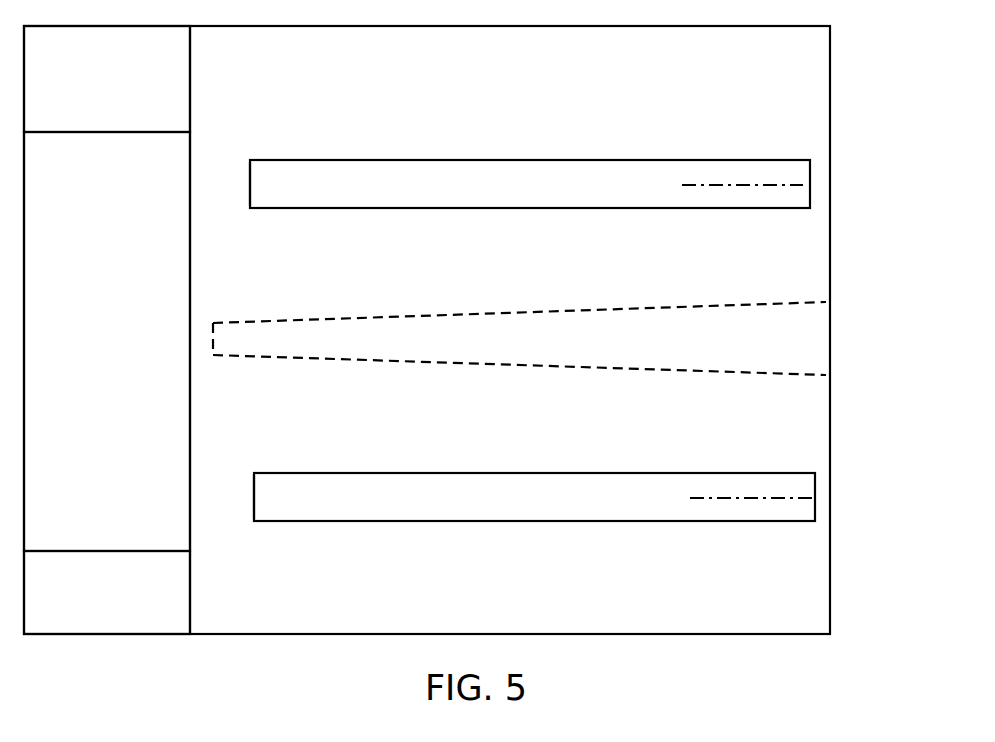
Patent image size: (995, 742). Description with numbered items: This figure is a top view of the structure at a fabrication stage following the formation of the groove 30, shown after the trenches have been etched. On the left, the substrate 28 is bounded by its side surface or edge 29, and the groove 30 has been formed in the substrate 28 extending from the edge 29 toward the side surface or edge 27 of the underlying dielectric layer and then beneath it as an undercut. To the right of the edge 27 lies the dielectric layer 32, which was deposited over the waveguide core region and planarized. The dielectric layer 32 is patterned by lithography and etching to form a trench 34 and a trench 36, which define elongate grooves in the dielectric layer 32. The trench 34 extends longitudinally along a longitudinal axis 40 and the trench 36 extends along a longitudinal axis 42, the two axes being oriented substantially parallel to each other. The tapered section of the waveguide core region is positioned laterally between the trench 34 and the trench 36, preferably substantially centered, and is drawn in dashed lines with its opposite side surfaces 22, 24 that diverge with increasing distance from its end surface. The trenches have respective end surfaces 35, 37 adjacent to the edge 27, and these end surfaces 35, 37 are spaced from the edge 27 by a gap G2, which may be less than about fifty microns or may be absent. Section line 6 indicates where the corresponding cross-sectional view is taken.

The section line 6 is at (462, 74).
The side surface 22 is at (357, 159).
The side surface 24 is at (330, 210).
The edge of the dielectric layer 27 is at (190, 435).
The substrate 28 is at (153, 601).
The edge of the substrate 29 is at (24, 296).
The groove 30 is at (105, 132).
The dielectric layer 32 is at (773, 254).
The trench 34 is at (515, 197).
The end surface of the trench 35 is at (250, 182).
The trench 36 is at (519, 509).
The end surface of the trench 37 is at (254, 490).
The longitudinal axis 40 is at (715, 185).
The longitudinal axis 42 is at (755, 498).
The gap G2 is at (277, 253).